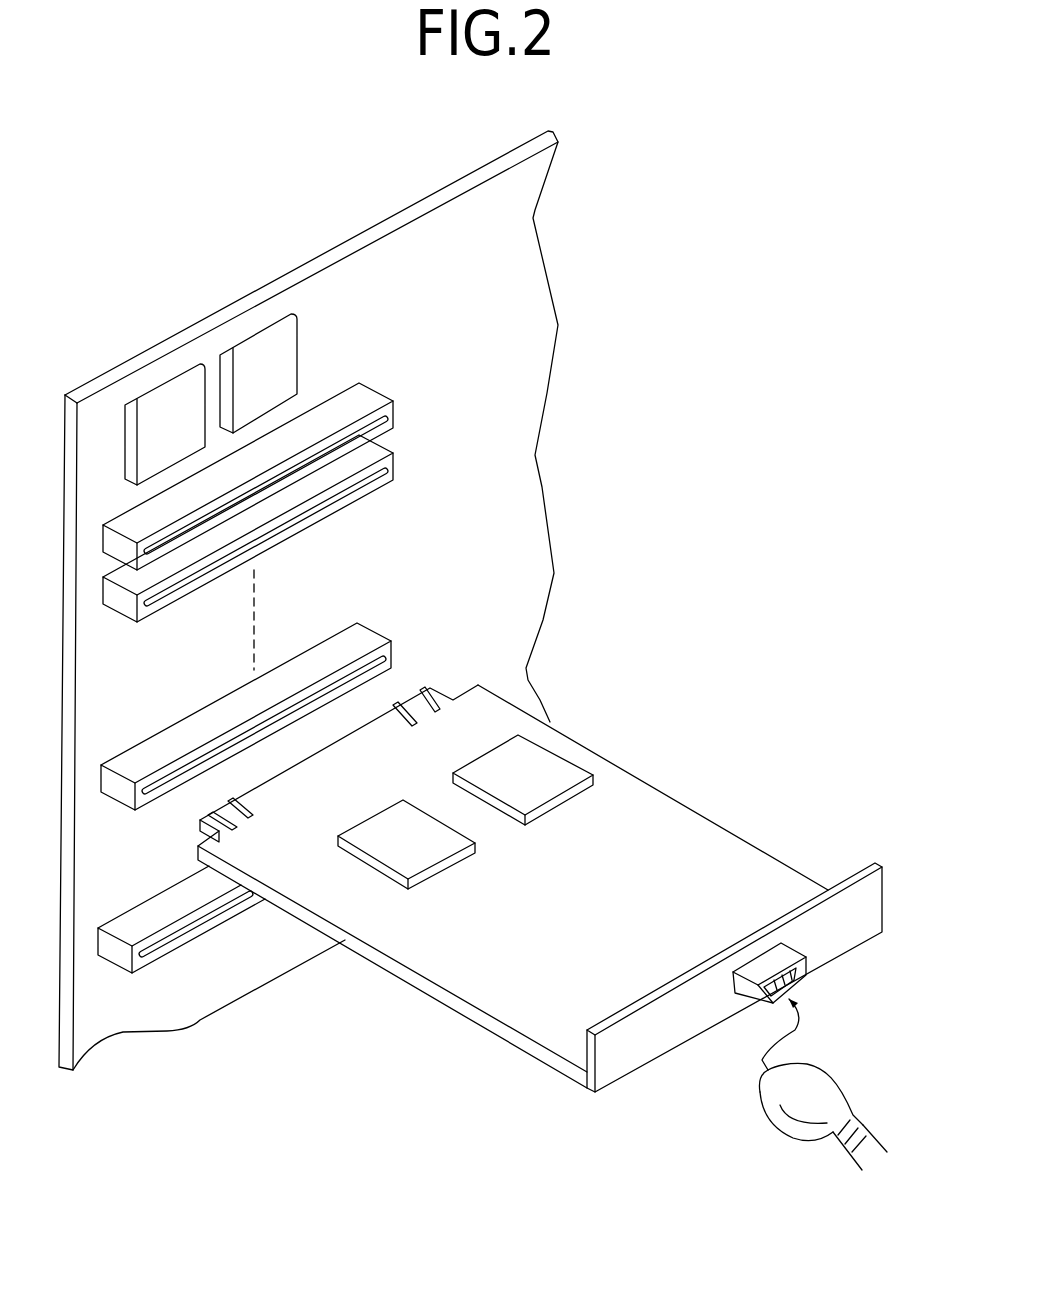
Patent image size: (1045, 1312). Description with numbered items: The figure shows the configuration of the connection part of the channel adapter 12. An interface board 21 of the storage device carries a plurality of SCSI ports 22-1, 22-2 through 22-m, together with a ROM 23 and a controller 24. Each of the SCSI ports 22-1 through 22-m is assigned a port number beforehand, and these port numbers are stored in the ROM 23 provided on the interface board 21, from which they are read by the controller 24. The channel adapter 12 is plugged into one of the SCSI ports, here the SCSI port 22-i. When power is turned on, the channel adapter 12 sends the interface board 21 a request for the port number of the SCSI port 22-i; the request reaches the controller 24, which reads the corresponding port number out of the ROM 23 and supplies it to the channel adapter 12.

The interface board 21 is at (334, 240).
The ROM 23 is at (168, 403).
The controller 24 is at (266, 347).
The SCSI port 22-1 is at (368, 398).
The SCSI port 22-2 is at (380, 447).
The SCSI port 22-i is at (368, 638).
The SCSI port 22-m is at (123, 957).
The channel adapter 12 is at (670, 792).